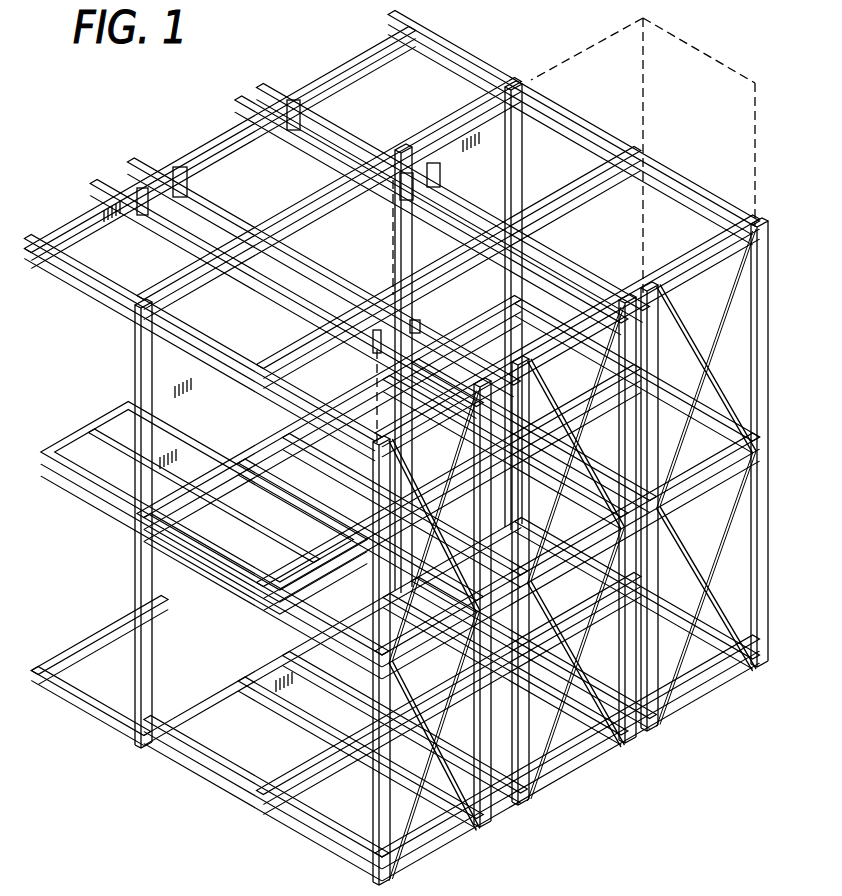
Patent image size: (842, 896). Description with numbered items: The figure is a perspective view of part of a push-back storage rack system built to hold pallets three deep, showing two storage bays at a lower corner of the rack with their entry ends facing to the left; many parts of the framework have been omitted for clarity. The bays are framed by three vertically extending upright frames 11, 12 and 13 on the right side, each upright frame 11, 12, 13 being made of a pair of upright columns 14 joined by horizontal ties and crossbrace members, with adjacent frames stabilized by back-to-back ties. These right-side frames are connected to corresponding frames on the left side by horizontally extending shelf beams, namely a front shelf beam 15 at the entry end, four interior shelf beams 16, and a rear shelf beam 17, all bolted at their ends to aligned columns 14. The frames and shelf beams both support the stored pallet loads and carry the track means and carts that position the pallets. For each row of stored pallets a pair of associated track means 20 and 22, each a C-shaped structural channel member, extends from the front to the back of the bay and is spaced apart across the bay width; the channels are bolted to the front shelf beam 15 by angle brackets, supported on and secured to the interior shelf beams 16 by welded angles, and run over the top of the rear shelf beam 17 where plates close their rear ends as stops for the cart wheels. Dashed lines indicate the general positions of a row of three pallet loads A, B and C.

The upright frame 11 is at (462, 849).
The upright frame 12 is at (590, 773).
The upright frame 13 is at (703, 710).
The upright column 14 is at (143, 564).
The front shelf beam 15 is at (94, 300).
The interior shelf beam 16 is at (447, 213).
The rear shelf beam 17 is at (456, 66).
The track means 20 is at (311, 196).
The track means 22 is at (211, 144).
The pallet load A is at (275, 312).
The pallet load B is at (455, 140).
The pallet load C is at (700, 48).